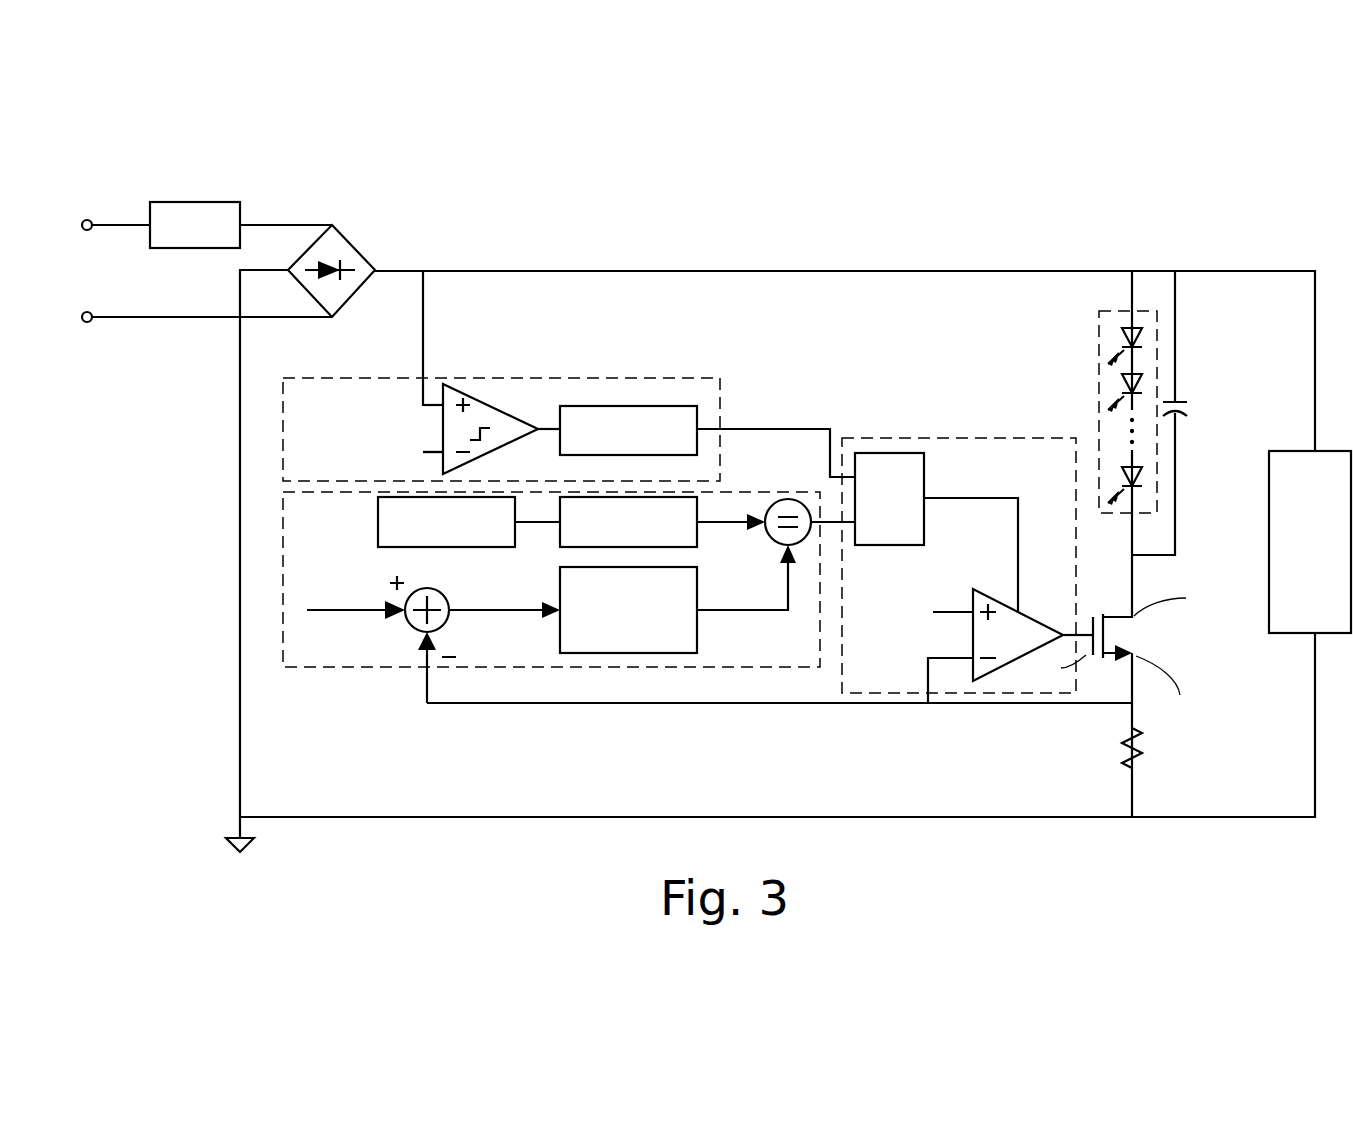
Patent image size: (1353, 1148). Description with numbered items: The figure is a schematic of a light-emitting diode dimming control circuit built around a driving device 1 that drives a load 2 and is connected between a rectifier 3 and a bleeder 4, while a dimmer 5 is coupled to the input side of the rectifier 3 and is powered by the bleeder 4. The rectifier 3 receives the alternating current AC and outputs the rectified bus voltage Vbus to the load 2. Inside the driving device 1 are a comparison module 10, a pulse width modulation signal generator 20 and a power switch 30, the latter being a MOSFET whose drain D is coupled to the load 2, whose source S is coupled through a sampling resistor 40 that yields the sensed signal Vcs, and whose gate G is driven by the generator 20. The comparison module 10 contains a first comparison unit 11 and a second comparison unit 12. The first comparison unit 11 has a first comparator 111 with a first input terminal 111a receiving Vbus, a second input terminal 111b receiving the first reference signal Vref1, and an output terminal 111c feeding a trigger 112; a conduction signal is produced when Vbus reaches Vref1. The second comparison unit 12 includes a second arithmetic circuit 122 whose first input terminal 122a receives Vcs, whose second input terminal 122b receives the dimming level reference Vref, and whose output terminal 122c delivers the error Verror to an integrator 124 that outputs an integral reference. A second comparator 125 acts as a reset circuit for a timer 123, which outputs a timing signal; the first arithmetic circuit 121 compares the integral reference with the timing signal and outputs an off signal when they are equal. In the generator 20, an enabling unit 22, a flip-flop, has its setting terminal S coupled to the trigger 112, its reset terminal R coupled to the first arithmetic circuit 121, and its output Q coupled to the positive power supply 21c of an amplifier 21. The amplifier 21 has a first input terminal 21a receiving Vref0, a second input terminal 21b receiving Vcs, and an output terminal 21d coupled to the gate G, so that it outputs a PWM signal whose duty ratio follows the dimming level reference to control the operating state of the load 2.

The driving device 1 is at (118, 165).
The load 2 is at (1097, 330).
The rectifier 3 is at (366, 258).
The bleeder 4 is at (1319, 554).
The dimmer 5 is at (207, 240).
The comparison module 10 is at (110, 395).
The first comparison unit 11 is at (282, 433).
The second comparison unit 12 is at (282, 515).
The pulse width modulation signal generator 20 is at (983, 438).
The amplifier 21 is at (1005, 670).
The first input terminal 21a is at (971, 607).
The second input terminal 21b is at (971, 657).
The positive power supply 21c is at (1006, 606).
The output terminal 21d is at (1061, 635).
The enabling unit 22 is at (892, 453).
The power switch 30 is at (1137, 633).
The sampling resistor 40 is at (1143, 748).
The first comparator 111 is at (483, 400).
The first input terminal 111a is at (441, 400).
The second input terminal 111b is at (441, 450).
The output terminal 111c is at (539, 428).
The trigger 112 is at (652, 445).
The first arithmetic circuit 121 is at (789, 498).
The second arithmetic circuit 122 is at (410, 626).
The first input terminal 122a is at (420, 637).
The second input terminal 122b is at (408, 597).
The output terminal 122c is at (450, 614).
The timer 123 is at (652, 537).
The integrator 124 is at (652, 624).
The second comparator 125 is at (470, 537).